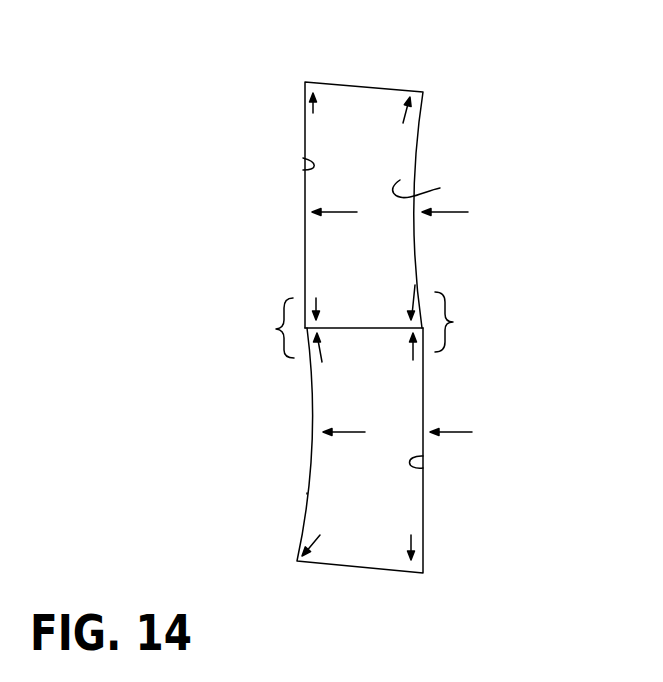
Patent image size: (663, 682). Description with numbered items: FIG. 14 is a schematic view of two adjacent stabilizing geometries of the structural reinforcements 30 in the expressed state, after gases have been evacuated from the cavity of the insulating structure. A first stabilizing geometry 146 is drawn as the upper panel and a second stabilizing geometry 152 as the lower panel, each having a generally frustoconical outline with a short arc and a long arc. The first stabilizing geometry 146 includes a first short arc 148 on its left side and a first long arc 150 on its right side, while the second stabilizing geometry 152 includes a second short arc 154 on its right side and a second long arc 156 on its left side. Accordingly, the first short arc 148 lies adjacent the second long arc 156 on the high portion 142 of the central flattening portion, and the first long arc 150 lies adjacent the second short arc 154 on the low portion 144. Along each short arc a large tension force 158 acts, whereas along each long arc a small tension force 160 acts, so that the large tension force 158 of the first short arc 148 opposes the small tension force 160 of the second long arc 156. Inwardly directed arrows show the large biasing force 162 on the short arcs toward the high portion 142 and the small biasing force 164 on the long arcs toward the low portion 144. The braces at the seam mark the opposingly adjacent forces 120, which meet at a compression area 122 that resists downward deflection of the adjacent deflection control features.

The structural reinforcements 30 is at (543, 107).
The opposingly adjacent forces 120 is at (455, 322).
The compression area 122 is at (385, 327).
The high portion 142 is at (198, 305).
The low portion 144 is at (535, 367).
The first stabilizing geometry 146 is at (370, 103).
The first short arc 148 is at (303, 158).
The first long arc 150 is at (400, 180).
The second stabilizing geometry 152 is at (367, 552).
The second short arc 154 is at (423, 468).
The second long arc 156 is at (307, 493).
The large tension force 158 is at (305, 106).
The small tension force 160 is at (418, 288).
The large biasing force 162 is at (343, 210).
The small biasing force 164 is at (455, 212).